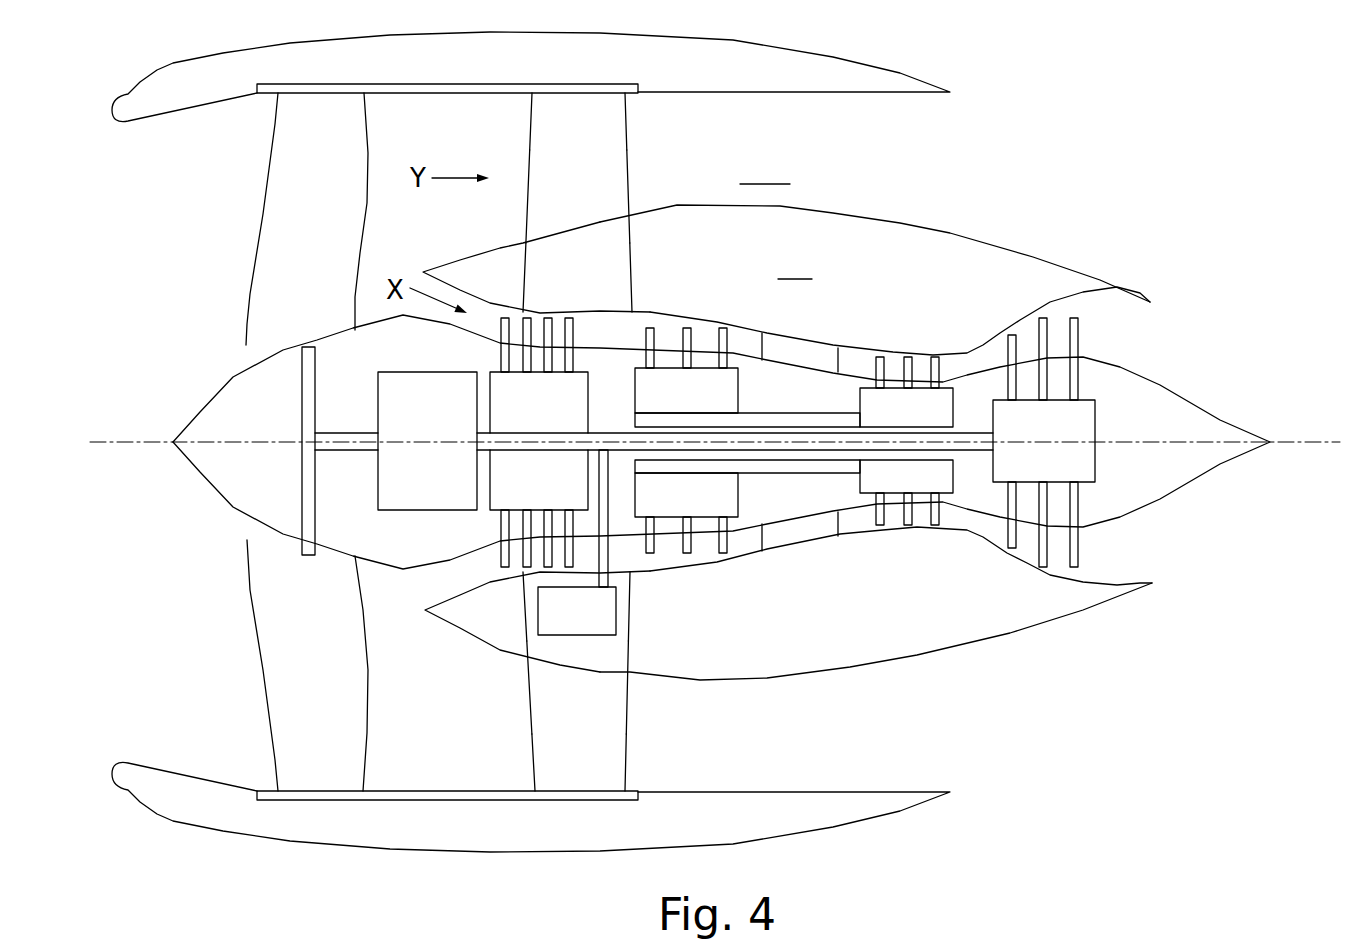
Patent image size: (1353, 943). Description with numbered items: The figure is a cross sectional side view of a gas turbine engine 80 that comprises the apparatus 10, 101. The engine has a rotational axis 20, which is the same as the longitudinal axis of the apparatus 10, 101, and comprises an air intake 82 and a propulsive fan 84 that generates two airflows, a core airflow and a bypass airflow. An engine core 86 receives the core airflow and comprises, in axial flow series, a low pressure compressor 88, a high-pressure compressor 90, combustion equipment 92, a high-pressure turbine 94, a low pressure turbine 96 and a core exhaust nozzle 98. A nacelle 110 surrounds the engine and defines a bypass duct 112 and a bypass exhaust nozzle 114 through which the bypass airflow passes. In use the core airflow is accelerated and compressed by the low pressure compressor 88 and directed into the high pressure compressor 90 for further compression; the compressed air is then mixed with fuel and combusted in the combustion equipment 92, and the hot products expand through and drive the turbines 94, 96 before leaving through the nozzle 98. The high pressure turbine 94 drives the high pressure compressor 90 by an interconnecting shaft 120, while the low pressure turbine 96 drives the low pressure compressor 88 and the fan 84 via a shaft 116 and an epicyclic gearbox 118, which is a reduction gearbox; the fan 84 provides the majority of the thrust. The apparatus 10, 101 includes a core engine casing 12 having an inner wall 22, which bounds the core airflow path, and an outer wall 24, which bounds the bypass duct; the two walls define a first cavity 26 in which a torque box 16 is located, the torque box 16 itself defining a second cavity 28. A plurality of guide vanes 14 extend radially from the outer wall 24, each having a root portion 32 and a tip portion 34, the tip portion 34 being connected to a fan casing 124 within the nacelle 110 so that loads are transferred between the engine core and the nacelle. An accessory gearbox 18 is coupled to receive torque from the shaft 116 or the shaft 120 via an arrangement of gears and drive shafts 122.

The apparatus 10 is at (721, 367).
The apparatus 101 is at (721, 367).
The core engine casing 12 is at (791, 443).
The guide vanes 14 is at (596, 442).
The torque box 16 is at (638, 265).
The accessory gearbox 18 is at (560, 624).
The rotational axis 20 is at (1293, 443).
The inner wall 22 is at (650, 313).
The outer wall 24 is at (858, 213).
The first cavity 26 is at (795, 265).
The second cavity 28 is at (565, 289).
The root portion 32 is at (560, 222).
The tip portion 34 is at (563, 122).
The gas turbine engine 80 is at (1170, 746).
The air intake 82 is at (155, 305).
The propulsive fan 84 is at (307, 442).
The engine core 86 is at (828, 337).
The low pressure compressor 88 is at (523, 418).
The high-pressure compressor 90 is at (669, 404).
The combustion equipment 92 is at (800, 577).
The high-pressure turbine 94 is at (890, 422).
The low pressure turbine 96 is at (1026, 455).
The core exhaust nozzle 98 is at (1157, 335).
The nacelle 110 is at (797, 80).
The bypass duct 112 is at (765, 170).
The bypass exhaust nozzle 114 is at (992, 134).
The shaft 116 is at (777, 443).
The epicyclic gearbox 118 is at (402, 446).
The interconnecting shaft 120 is at (830, 465).
The drive shafts 122 is at (608, 555).
The fan casing 124 is at (407, 82).